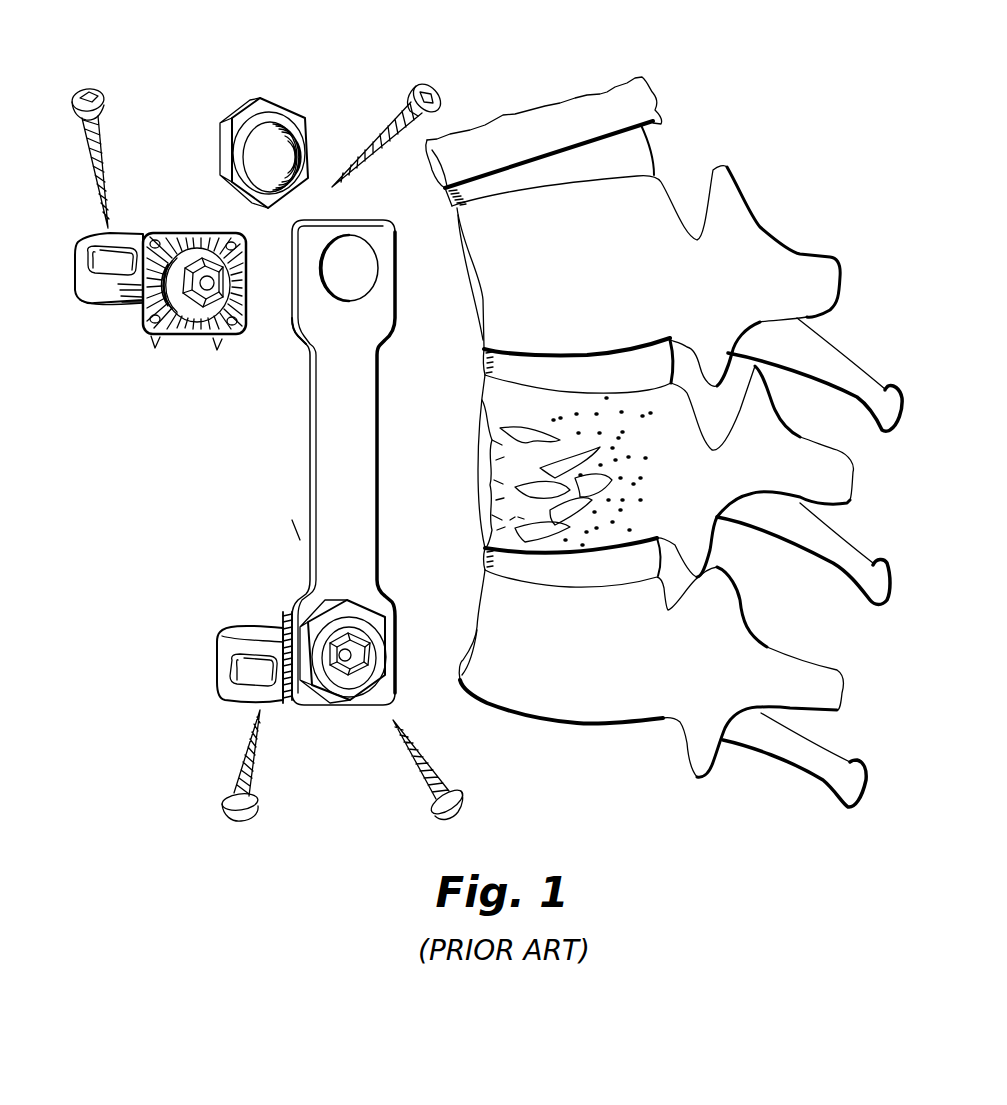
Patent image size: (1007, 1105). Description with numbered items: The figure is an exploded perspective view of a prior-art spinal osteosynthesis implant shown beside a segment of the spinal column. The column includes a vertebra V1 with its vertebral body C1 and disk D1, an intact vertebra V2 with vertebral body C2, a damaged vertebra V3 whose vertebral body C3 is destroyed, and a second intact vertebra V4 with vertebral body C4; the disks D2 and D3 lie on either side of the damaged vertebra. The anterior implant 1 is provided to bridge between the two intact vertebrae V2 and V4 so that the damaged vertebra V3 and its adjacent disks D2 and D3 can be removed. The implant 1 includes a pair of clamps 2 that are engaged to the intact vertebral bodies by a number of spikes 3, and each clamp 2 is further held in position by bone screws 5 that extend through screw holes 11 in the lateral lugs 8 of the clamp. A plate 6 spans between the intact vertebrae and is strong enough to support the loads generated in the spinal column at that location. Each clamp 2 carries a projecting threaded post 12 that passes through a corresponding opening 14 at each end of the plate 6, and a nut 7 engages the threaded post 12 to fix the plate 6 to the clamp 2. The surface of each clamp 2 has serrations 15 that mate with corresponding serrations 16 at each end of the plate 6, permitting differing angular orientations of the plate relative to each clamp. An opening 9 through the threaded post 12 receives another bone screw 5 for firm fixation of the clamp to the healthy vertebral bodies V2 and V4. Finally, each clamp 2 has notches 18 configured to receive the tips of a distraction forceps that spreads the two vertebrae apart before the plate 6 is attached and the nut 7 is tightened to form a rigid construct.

The anterior implant 1 is at (280, 530).
The clamp 2 is at (185, 340).
The spikes 3 is at (152, 346).
The bone screws 5 is at (112, 139).
The plate 6 is at (308, 457).
The nut 7 is at (290, 96).
The lateral lugs 8 is at (92, 312).
The opening 9 is at (246, 264).
The screw holes 11 is at (108, 256).
The threaded post 12 is at (252, 291).
The opening 14 is at (350, 266).
The serrations 15 is at (152, 240).
The serrations 16 is at (286, 312).
The notches 18 is at (128, 302).
The vertebra V1 is at (656, 88).
The intact vertebra V2 is at (798, 256).
The damaged vertebra V3 is at (855, 484).
The intact vertebra V4 is at (812, 658).
The vertebral body C1 is at (445, 172).
The vertebral body C2 is at (490, 288).
The destroyed vertebral body C3 is at (492, 465).
The vertebral body C4 is at (486, 628).
The disk D1 is at (455, 205).
The disk D2 is at (480, 360).
The disk D3 is at (480, 555).